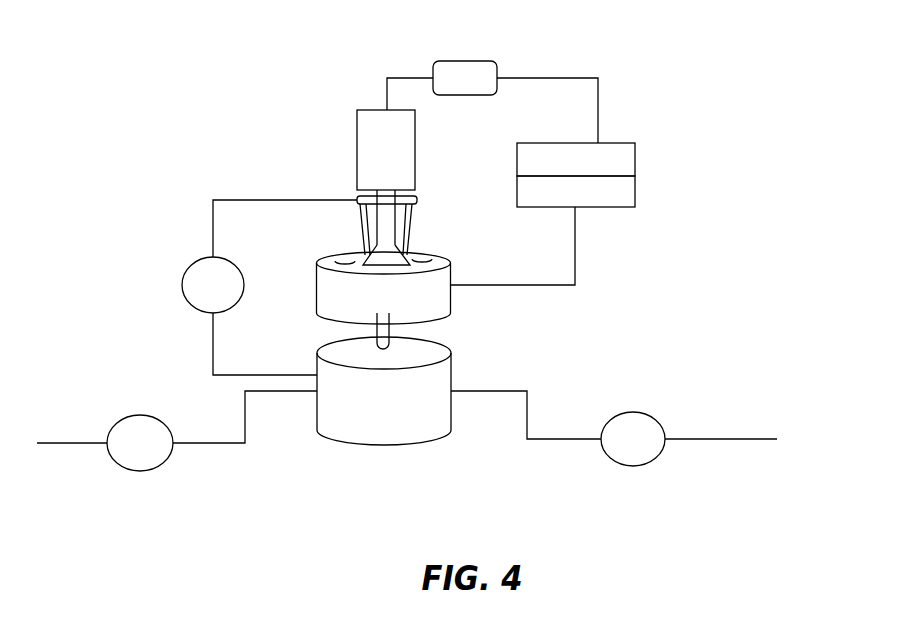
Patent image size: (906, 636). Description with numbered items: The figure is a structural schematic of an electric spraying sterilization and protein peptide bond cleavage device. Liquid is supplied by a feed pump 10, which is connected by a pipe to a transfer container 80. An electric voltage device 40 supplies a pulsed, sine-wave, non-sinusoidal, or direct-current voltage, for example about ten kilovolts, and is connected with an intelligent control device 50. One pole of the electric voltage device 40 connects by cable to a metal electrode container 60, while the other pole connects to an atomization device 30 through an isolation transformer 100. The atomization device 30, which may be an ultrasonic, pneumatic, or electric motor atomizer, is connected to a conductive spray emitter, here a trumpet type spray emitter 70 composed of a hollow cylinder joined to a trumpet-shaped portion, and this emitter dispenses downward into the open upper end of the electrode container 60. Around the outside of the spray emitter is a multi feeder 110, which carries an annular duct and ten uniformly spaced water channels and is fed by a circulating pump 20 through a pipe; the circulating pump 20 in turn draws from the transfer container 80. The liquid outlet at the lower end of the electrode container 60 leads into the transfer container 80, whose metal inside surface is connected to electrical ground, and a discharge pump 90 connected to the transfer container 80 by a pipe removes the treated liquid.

The feed pump 10 is at (135, 416).
The circulating pump 20 is at (183, 292).
The atomization device 30 is at (357, 132).
The electric voltage device 40 is at (607, 172).
The intelligent control device 50 is at (607, 200).
The electrode container 60 is at (451, 270).
The trumpet type spray emitter 70 is at (360, 256).
The transfer container 80 is at (453, 375).
The discharge pump 90 is at (658, 421).
The isolation transformer 100 is at (497, 80).
The multi feeder 110 is at (415, 198).